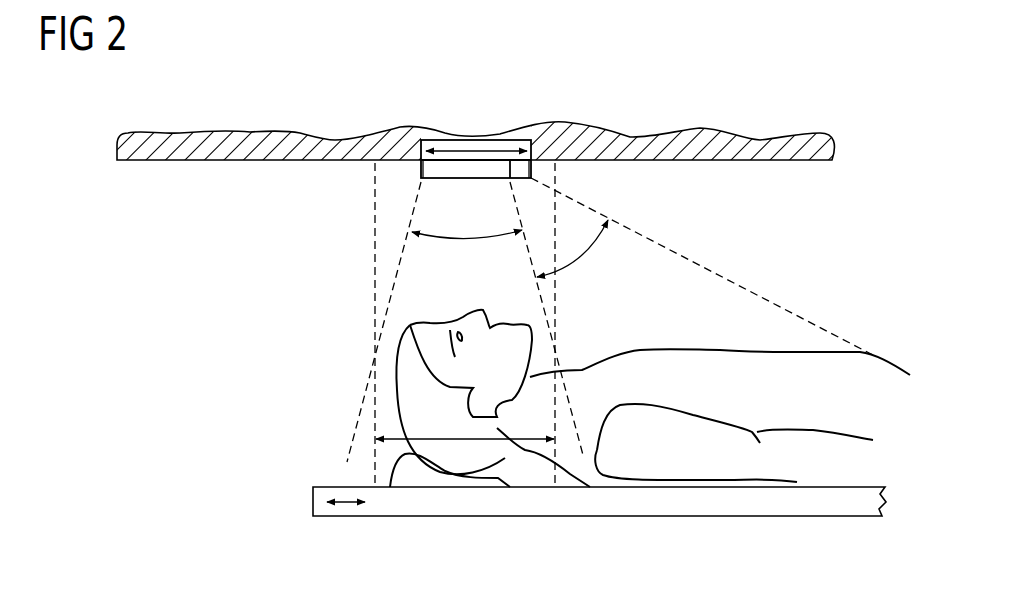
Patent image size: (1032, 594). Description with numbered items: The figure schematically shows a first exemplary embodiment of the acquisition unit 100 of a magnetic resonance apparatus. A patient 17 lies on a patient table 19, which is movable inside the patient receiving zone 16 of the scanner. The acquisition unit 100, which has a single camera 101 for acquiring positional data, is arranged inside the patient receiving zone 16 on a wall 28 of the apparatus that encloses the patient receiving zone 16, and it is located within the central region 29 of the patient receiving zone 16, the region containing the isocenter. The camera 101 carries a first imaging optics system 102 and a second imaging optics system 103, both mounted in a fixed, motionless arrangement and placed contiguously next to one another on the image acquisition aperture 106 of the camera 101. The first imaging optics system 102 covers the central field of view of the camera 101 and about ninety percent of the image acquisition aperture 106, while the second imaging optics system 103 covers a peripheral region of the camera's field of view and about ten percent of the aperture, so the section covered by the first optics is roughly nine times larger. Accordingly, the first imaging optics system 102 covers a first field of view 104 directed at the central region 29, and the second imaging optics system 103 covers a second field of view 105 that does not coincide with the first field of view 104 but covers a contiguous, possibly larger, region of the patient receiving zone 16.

The patient receiving zone 16 is at (731, 262).
The patient 17 is at (683, 363).
The patient table 19 is at (685, 503).
The wall 28 is at (690, 146).
The central region 29 is at (465, 440).
The acquisition unit 100 is at (476, 138).
The camera 101 is at (503, 148).
The first imaging optics system 102 is at (424, 171).
The second imaging optics system 103 is at (535, 174).
The first field of view 104 is at (465, 238).
The second field of view 105 is at (578, 258).
The image acquisition aperture 106 is at (441, 148).